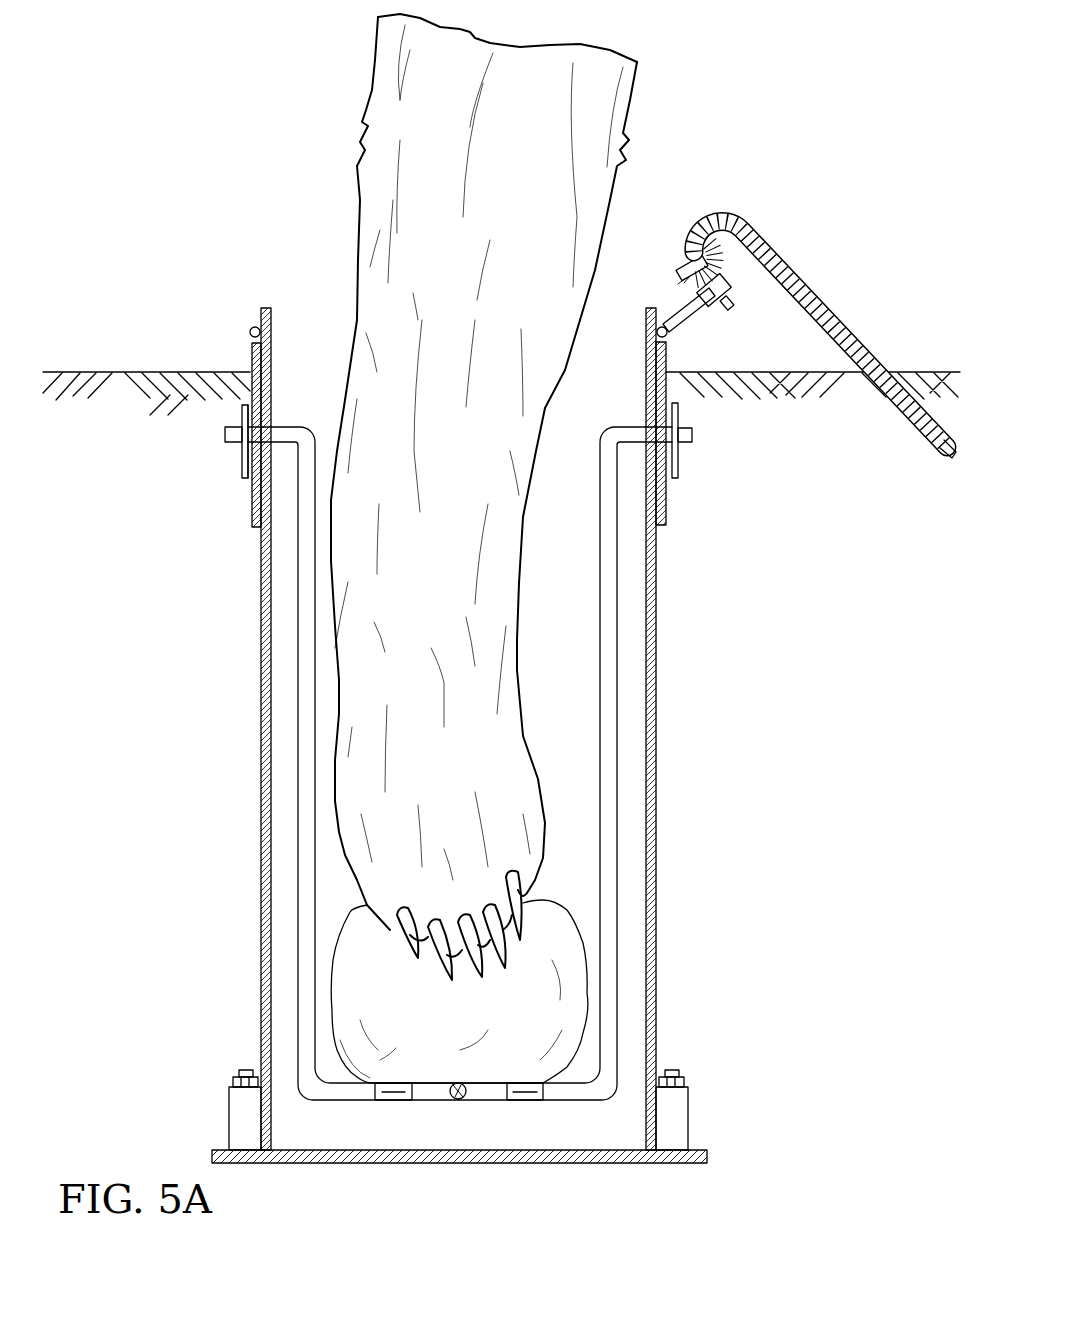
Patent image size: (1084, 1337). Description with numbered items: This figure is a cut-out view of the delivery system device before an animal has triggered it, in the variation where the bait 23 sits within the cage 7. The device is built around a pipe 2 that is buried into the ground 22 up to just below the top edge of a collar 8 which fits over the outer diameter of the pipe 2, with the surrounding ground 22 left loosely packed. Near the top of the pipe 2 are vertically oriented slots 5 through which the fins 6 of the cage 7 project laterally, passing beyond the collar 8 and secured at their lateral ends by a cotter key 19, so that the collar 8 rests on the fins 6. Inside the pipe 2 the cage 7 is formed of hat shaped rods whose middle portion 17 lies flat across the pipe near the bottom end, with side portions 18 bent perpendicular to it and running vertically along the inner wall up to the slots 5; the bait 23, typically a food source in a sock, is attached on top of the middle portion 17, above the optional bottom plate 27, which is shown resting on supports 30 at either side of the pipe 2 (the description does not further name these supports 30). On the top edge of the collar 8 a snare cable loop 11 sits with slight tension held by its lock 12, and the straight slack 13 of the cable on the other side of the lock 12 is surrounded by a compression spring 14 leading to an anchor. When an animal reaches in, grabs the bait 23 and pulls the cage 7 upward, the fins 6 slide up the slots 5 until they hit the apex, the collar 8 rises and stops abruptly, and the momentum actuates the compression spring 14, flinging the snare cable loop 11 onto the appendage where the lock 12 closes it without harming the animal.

The pipe 2 is at (660, 743).
The slots 5 is at (263, 413).
The fins 6 is at (225, 440).
The cage 7 is at (624, 678).
The collar 8 is at (250, 502).
The snare cable loop 11 is at (253, 327).
The lock 12 is at (720, 280).
The straight slack 13 is at (939, 456).
The compression spring 14 is at (812, 277).
The middle portion 17 is at (464, 1095).
The side portions 18 is at (297, 900).
The cotter key 19 is at (241, 408).
The ground 22 is at (80, 372).
The bait 23 is at (543, 977).
The bottom plate 27 is at (420, 1163).
The support block 30 is at (243, 1110).